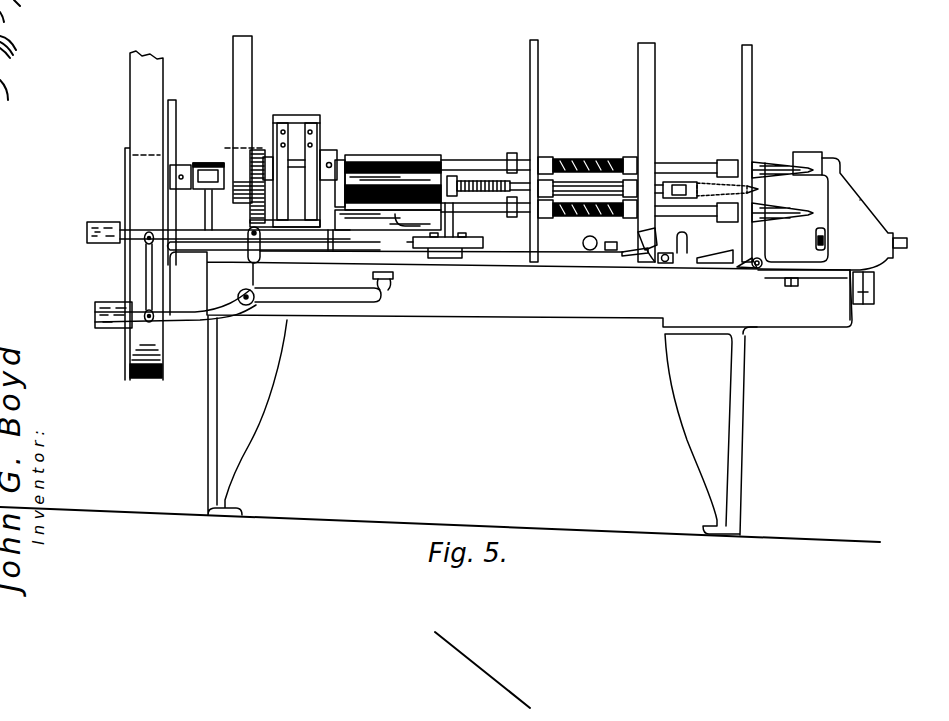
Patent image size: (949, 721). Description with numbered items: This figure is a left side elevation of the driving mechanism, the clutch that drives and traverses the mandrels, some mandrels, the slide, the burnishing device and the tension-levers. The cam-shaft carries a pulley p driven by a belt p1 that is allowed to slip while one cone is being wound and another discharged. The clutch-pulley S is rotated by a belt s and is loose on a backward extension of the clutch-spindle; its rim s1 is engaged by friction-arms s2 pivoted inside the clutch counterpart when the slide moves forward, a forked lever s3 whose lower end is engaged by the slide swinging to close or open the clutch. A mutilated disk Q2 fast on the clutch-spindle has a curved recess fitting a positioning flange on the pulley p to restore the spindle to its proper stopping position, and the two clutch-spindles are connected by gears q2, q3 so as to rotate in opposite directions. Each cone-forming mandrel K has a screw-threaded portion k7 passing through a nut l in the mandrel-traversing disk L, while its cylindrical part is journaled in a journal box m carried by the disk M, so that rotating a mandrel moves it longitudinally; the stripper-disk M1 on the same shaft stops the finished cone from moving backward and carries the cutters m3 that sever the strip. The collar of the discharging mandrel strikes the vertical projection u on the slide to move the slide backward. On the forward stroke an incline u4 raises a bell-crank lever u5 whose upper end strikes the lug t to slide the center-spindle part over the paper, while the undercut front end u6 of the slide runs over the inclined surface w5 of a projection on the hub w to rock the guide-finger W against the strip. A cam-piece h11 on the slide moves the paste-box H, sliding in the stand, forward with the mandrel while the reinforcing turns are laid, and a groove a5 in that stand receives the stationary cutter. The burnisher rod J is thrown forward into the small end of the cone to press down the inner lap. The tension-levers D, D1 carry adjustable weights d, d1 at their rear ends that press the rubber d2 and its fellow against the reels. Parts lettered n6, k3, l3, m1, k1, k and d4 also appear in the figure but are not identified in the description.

The belt p1 is at (165, 73).
The pulley p is at (157, 355).
The mutilated disk Q2 is at (174, 112).
The clutch-pulley S is at (230, 158).
The belt s is at (252, 93).
The rim s1 is at (300, 125).
The friction-arms s2 is at (257, 212).
The forked lever s3 is at (320, 241).
The plate n6 is at (314, 118).
The gear q2 is at (343, 172).
The gear q3 is at (347, 208).
The rubber d2 is at (407, 182).
The collar k3 is at (510, 155).
The tension-lever D is at (347, 230).
The tension-lever D1 is at (336, 300).
The vertical projection u is at (453, 230).
The clip l3 is at (408, 285).
The mandrel-traversing disk L is at (533, 106).
The nut l is at (542, 158).
The screw-threaded portion k7 is at (566, 177).
The journal box m is at (626, 158).
The disk M is at (648, 108).
The sleeve m1 is at (658, 164).
The cone-forming mandrel K is at (688, 162).
The lug t is at (696, 170).
The block k1 is at (727, 158).
The stripper-disk M1 is at (752, 114).
The spindle k is at (762, 217).
The cutter m3 is at (758, 176).
The guide-finger W is at (757, 241).
The groove a5 is at (882, 211).
The burnisher rod J is at (905, 248).
The inclined upper surface w5 is at (747, 266).
The undercut front end u6 is at (742, 266).
The bell-crank lever u5 is at (678, 235).
The incline u4 is at (646, 256).
The cam-piece h11 is at (612, 252).
The adjustable weight d is at (87, 236).
The adjustable weight d1 is at (93, 313).
The link d4 is at (152, 287).
The hub w is at (244, 276).
The paste-box H is at (223, 416).